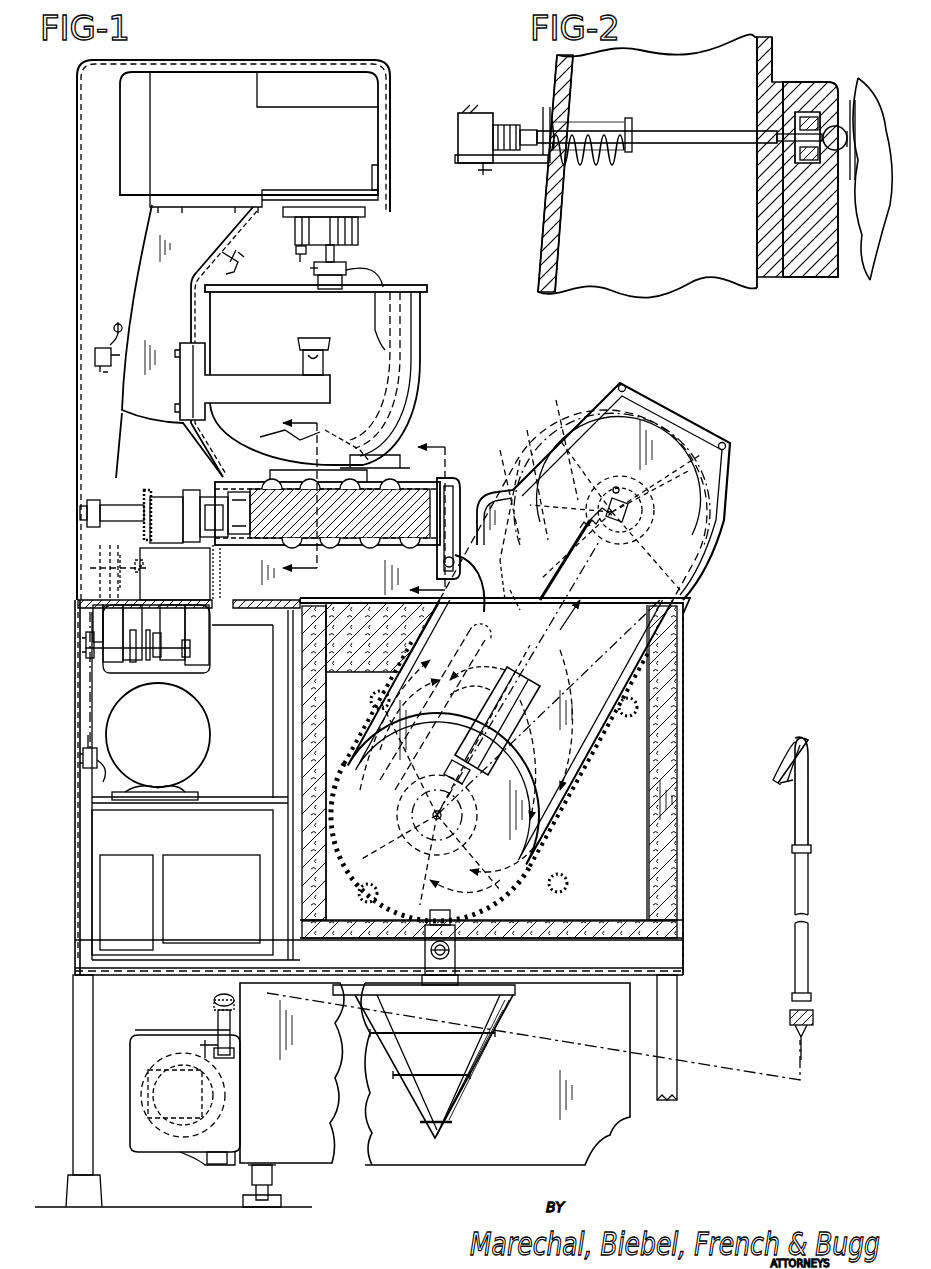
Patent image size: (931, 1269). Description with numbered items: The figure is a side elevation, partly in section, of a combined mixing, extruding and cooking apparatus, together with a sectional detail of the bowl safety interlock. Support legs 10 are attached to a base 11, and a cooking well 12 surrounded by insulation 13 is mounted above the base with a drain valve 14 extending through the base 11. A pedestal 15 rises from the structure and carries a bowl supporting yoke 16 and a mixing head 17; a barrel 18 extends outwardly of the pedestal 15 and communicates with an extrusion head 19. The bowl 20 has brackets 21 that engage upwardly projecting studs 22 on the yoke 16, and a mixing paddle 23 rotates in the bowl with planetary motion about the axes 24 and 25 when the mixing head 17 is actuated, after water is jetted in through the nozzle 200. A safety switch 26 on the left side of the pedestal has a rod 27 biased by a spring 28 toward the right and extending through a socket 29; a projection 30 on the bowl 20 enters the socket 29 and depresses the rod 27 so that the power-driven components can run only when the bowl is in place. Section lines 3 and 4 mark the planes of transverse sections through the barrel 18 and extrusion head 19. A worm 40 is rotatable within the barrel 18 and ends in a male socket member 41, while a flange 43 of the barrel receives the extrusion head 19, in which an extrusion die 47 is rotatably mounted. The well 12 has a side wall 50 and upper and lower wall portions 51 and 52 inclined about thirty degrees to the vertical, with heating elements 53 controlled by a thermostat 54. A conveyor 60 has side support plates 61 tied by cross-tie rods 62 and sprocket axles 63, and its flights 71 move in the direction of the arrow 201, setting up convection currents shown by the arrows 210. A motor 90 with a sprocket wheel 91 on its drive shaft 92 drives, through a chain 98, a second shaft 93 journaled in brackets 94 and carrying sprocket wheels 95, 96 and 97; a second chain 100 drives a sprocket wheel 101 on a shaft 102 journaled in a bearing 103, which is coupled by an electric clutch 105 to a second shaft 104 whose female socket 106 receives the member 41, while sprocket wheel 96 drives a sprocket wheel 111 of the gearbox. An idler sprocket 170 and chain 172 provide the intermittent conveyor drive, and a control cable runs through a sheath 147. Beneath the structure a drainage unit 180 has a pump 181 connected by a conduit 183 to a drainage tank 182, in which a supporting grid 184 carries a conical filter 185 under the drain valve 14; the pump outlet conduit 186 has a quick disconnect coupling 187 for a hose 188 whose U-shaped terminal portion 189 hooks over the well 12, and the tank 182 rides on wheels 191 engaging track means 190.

In FIG. 1, the support legs 10 is at (80, 1055).
In FIG. 1, the base 11 is at (110, 975).
In FIG. 1, the cooking well 12 is at (630, 808).
In FIG. 1, the insulation 13 is at (393, 655).
In FIG. 1, the drain valve 14 is at (452, 960).
In FIG. 1, the pedestal 15 is at (148, 237).
In FIG. 2, the pedestal 15 is at (642, 249).
In FIG. 1, the bowl supporting yoke 16 is at (232, 380).
In FIG. 1, the mixing head 17 is at (218, 83).
In FIG. 1, the barrel 18 is at (400, 468).
In FIG. 1, the extrusion head 19 is at (458, 497).
In FIG. 1, the bowl 20 is at (420, 378).
In FIG. 1, the brackets 21 is at (328, 362).
In FIG. 1, the studs 22 is at (305, 357).
In FIG. 1, the mixing paddle 23 is at (380, 272).
In FIG. 1, the axis 24 is at (355, 250).
In FIG. 1, the axis 25 is at (303, 254).
In FIG. 1, the safety switch 26 is at (100, 355).
In FIG. 2, the safety switch 26 is at (468, 115).
In FIG. 2, the rod 27 is at (690, 132).
In FIG. 2, the spring 28 is at (596, 150).
In FIG. 2, the socket 29 is at (806, 115).
In FIG. 2, the projection 30 is at (842, 150).
In FIG. 1, the section line 3- 3 is at (308, 500).
In FIG. 1, the section line 4- 4 is at (433, 514).
In FIG. 1, the worm 40 is at (372, 546).
In FIG. 1, the male socket member 41 is at (252, 520).
In FIG. 1, the complementary flange 43 is at (425, 478).
In FIG. 1, the extrusion die 47 is at (487, 595).
In FIG. 1, the side wall 50 is at (685, 650).
In FIG. 1, the upper wall portion 51 is at (350, 775).
In FIG. 1, the lower wall portion 52 is at (550, 848).
In FIG. 1, the heating elements 53 is at (382, 697).
In FIG. 1, the thermostat 54 is at (518, 680).
In FIG. 1, the cover 60 is at (725, 530).
In FIG. 1, the side support plates 61 is at (666, 412).
In FIG. 1, the cross-tie rods 62 is at (622, 385).
In FIG. 1, the sprocket axles 63 is at (625, 500).
In FIG. 1, the flights 71 is at (582, 470).
In FIG. 1, the motor 90 is at (145, 754).
In FIG. 1, the sprocket wheel 91 is at (88, 750).
In FIG. 1, the drive shaft 92 is at (105, 763).
In FIG. 1, the second shaft 93 is at (185, 650).
In FIG. 1, the brackets 94 is at (178, 656).
In FIG. 1, the sprocket wheel 95 is at (92, 634).
In FIG. 1, the sprocket wheel 96 is at (135, 660).
In FIG. 1, the sprocket wheel 97 is at (150, 660).
In FIG. 1, the chain 98 is at (88, 705).
In FIG. 1, the second chain 100 is at (150, 575).
In FIG. 1, the sprocket wheel 101 is at (146, 522).
In FIG. 1, the shaft 102 is at (128, 505).
In FIG. 1, the bearing 103 is at (100, 495).
In FIG. 1, the second shaft 104 is at (205, 540).
In FIG. 1, the electric clutch 105 is at (163, 500).
In FIG. 1, the female socket 106 is at (238, 490).
In FIG. 1, the sprocket wheel 111 is at (120, 568).
In FIG. 1, the sheath 147 is at (118, 328).
In FIG. 1, the idler sprocket wheel 170 is at (500, 500).
In FIG. 1, the chain 172 is at (556, 470).
In FIG. 1, the drainage unit 180 is at (128, 1158).
In FIG. 1, the pump 181 is at (150, 1095).
In FIG. 1, the drainage tank 182 is at (393, 1165).
In FIG. 1, the conduit 183 is at (190, 1157).
In FIG. 1, the supporting grid 184 is at (455, 1100).
In FIG. 1, the conical filter 185 is at (412, 1062).
In FIG. 1, the conduit 186 is at (220, 1027).
In FIG. 1, the quick disconnect coupling 187 is at (215, 1003).
In FIG. 1, the hose 188 is at (806, 932).
In FIG. 1, the U-shaped terminal portion 189 is at (777, 770).
In FIG. 1, the track means 190 is at (250, 1207).
In FIG. 1, the wheels 191 is at (265, 1177).
In FIG. 1, the nozzle 200 is at (240, 262).
In FIG. 1, the arrow 201 is at (576, 554).
In FIG. 1, the arrows 210 is at (418, 822).